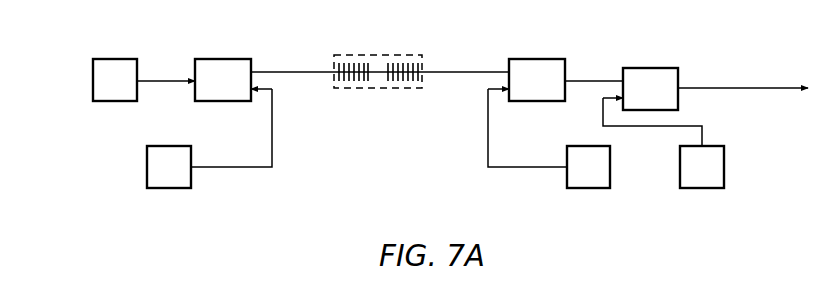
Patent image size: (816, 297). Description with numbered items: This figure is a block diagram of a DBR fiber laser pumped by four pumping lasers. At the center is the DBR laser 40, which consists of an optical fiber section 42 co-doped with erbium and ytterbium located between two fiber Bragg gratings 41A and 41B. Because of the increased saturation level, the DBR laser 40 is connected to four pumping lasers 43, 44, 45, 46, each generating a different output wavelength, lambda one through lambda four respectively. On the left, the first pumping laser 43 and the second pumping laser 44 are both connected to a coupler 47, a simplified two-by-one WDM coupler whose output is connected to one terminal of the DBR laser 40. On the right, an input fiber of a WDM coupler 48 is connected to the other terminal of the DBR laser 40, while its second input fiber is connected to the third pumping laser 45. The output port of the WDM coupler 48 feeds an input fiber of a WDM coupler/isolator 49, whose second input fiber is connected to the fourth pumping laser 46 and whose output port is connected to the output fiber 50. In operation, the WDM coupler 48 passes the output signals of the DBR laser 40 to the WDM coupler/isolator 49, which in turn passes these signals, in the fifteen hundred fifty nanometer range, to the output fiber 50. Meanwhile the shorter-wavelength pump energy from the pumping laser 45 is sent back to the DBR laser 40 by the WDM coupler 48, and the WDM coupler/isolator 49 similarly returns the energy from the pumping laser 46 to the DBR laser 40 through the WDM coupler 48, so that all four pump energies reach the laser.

The DBR laser 40 is at (355, 54).
The fiber Bragg grating 41A is at (355, 87).
The fiber Bragg grating 41B is at (402, 87).
The optical fiber section 42 is at (384, 66).
The first pumping laser 43 is at (103, 58).
The second pumping laser 44 is at (147, 166).
The third pumping laser 45 is at (610, 166).
The fourth pumping laser 46 is at (715, 146).
The WDM coupler 47 is at (220, 58).
The WDM coupler 48 is at (543, 59).
The WDM coupler/isolator 49 is at (655, 68).
The output fiber 50 is at (762, 88).